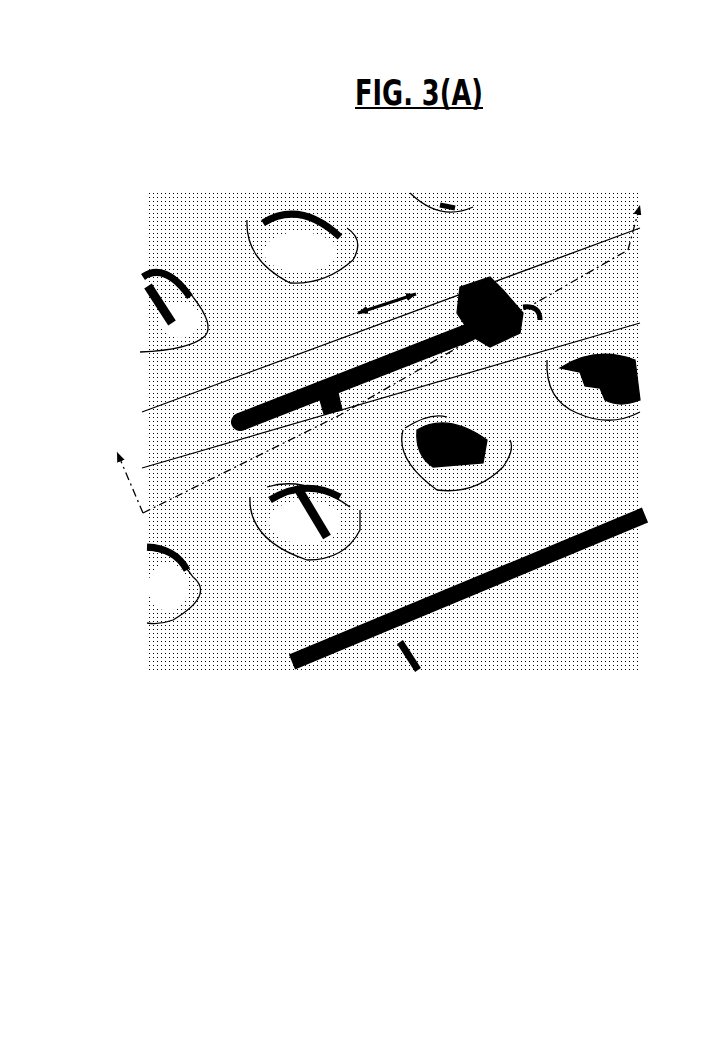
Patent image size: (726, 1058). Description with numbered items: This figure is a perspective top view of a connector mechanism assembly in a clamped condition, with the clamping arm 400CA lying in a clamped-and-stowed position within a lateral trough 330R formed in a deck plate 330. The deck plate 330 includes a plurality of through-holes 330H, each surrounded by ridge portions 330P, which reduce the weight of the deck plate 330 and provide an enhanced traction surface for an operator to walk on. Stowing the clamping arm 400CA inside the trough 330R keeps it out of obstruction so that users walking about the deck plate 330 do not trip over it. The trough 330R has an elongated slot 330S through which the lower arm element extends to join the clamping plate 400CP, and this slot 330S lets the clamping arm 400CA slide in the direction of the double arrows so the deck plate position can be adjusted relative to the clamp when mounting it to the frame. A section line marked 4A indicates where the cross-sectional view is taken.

The deck plate 330 is at (323, 618).
The through-holes 330H is at (293, 222).
The ridge portions 330P is at (327, 200).
The lateral trough 330R is at (513, 248).
The slot 330S is at (507, 437).
The clamping arm 400CA is at (357, 393).
The clamping plate 400CP is at (458, 353).
The section line 4A is at (402, 359).